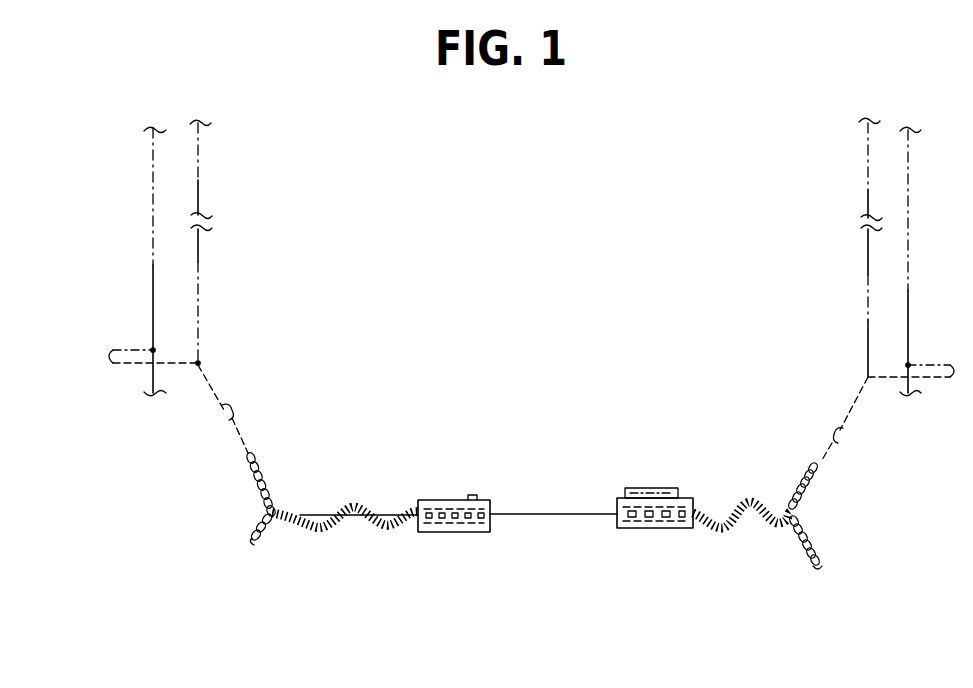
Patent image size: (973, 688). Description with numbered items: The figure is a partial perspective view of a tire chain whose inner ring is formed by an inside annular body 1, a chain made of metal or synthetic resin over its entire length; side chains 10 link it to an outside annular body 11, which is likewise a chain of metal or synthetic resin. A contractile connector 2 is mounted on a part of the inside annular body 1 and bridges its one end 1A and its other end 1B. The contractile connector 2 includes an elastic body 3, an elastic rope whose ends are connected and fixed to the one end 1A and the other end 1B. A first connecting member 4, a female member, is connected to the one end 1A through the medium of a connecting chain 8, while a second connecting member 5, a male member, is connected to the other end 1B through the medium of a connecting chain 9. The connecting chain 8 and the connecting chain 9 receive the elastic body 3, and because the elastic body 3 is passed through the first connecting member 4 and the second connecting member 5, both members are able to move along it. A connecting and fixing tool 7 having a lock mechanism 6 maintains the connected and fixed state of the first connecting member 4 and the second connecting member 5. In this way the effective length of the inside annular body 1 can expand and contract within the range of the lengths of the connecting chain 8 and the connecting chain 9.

The inside annular body 1 is at (198, 181).
The one end of the inside annular body 1A is at (268, 487).
The other end of the inside annular body 1B is at (790, 495).
The contractile connector 2 is at (580, 430).
The elastic body 3 is at (555, 516).
The first connecting member 4 is at (460, 532).
The second connecting member 5 is at (653, 528).
The lock mechanism 6 is at (633, 490).
The connecting and fixing tool 7 is at (452, 580).
The connecting chain 8 is at (360, 505).
The connecting chain 9 is at (738, 505).
The side chain 10 is at (162, 360).
The outside annular body 11 is at (153, 275).